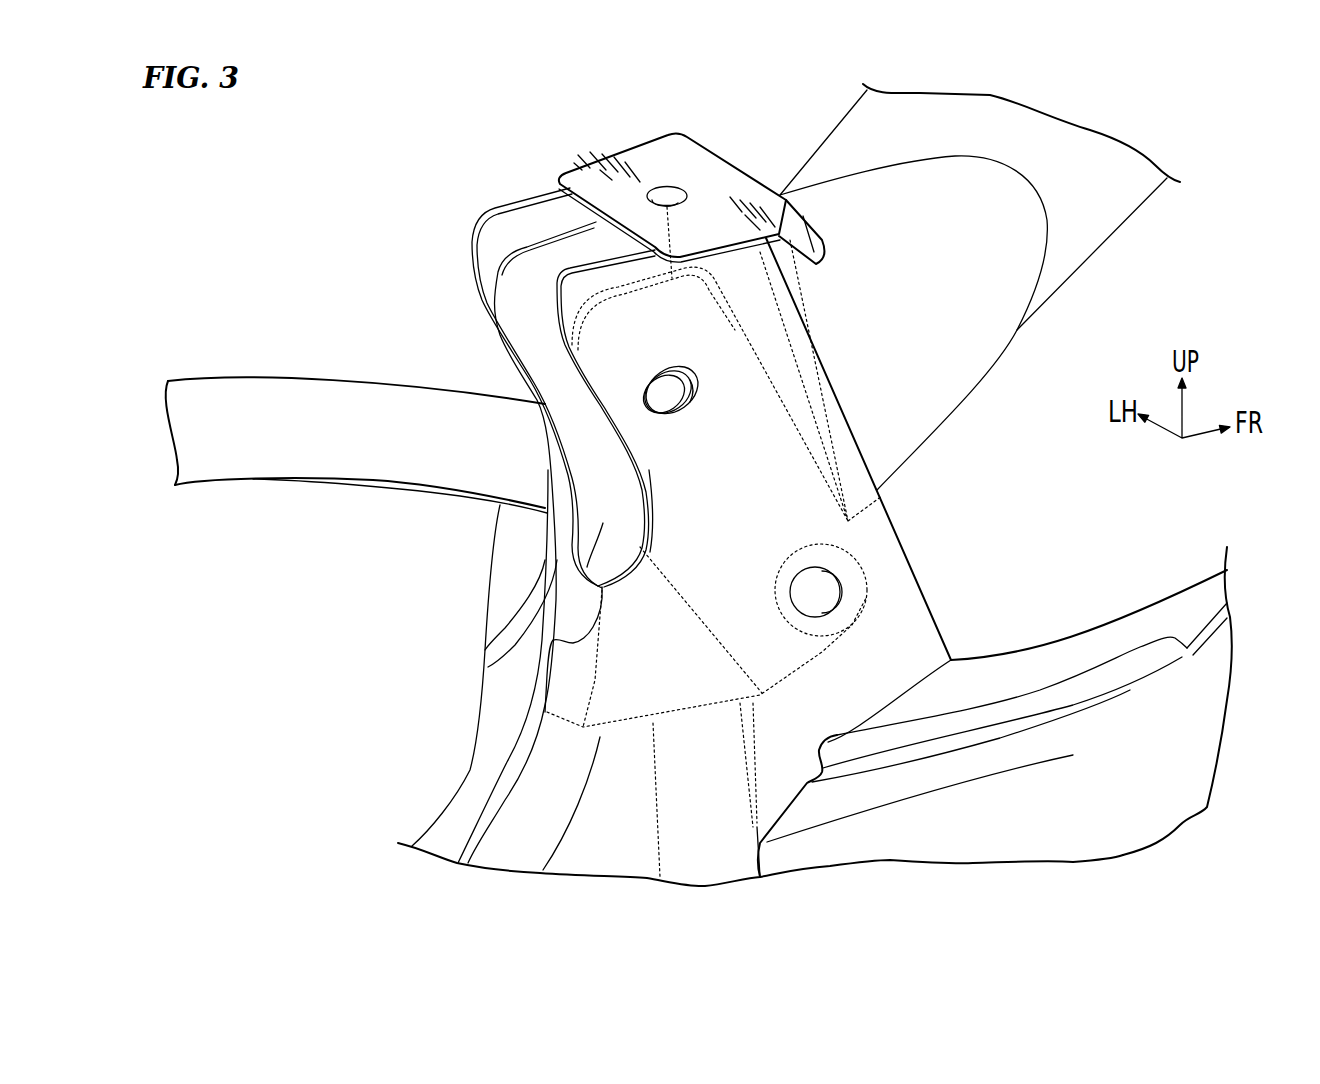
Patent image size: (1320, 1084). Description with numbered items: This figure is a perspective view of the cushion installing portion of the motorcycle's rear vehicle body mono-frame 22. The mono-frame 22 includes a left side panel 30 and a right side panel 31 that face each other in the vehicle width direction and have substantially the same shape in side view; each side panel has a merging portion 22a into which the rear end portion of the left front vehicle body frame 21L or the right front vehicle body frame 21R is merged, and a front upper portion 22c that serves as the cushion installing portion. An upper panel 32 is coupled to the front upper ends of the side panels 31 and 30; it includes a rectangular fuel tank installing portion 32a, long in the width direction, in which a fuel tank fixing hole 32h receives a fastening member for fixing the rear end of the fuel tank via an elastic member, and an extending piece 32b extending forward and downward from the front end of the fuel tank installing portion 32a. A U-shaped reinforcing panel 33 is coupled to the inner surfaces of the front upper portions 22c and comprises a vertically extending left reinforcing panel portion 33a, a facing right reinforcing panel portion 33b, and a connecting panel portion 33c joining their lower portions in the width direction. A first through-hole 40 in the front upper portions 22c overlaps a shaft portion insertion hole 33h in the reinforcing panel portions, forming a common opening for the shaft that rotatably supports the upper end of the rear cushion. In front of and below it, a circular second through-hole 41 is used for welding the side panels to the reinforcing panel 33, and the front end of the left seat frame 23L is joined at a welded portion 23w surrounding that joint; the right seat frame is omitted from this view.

The left front vehicle body frame 21L is at (840, 147).
The right front vehicle body frame 21R is at (1090, 647).
The rear vehicle body mono-frame 22 is at (478, 690).
The merging portion 22a is at (946, 636).
The front upper portion 22c is at (767, 470).
The left seat frame 23L is at (293, 390).
The welded portion 23w is at (840, 556).
The left side panel 30 is at (487, 757).
The right side panel 31 is at (717, 853).
The upper panel 32 is at (601, 150).
The fuel tank installing portion 32a is at (697, 160).
The extending piece 32b is at (815, 228).
The fuel tank fixing hole 32h is at (668, 195).
The reinforcing panel 33 is at (500, 263).
The left reinforcing panel portion 33a is at (530, 268).
The right reinforcing panel portion 33b is at (652, 493).
The connecting panel portion 33c is at (570, 603).
The shaft portion insertion hole 33h is at (678, 388).
The first through-hole 40 is at (682, 395).
The second through-hole 41 is at (835, 592).